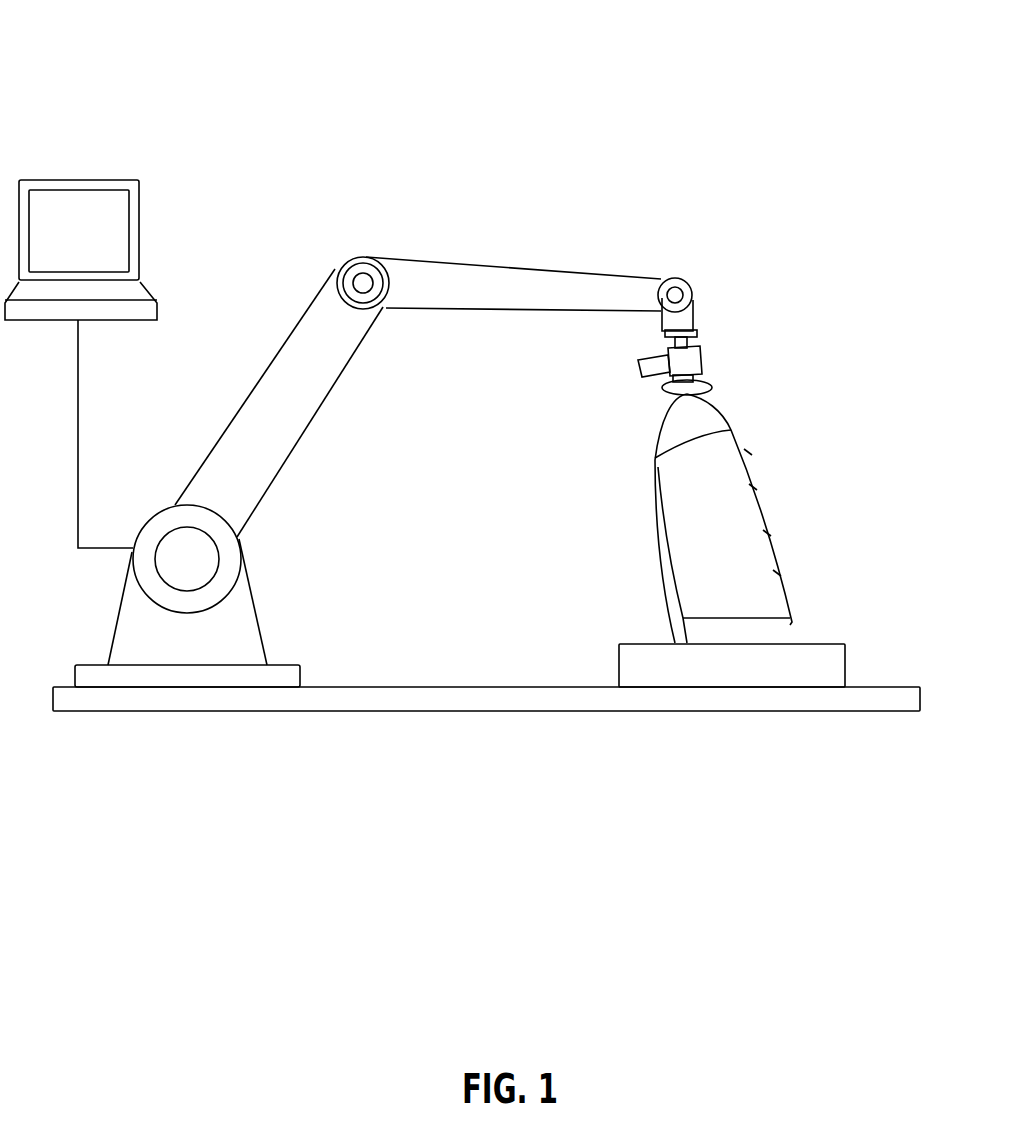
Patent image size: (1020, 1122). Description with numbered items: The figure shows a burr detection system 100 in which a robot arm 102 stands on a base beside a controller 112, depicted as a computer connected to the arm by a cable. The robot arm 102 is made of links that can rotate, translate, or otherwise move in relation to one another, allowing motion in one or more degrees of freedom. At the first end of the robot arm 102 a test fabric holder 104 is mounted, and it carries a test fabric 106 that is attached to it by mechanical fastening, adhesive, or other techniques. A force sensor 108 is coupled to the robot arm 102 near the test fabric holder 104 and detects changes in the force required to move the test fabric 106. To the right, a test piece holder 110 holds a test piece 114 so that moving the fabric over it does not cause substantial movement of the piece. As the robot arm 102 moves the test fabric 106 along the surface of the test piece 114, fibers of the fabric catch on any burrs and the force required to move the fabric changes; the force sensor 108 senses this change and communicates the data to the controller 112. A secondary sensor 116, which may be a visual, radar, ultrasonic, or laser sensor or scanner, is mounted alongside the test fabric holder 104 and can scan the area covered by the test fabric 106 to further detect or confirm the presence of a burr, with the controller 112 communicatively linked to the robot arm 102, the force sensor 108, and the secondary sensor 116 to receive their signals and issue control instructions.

The burr detection system 100 is at (150, 60).
The robot arm 102 is at (517, 264).
The test fabric holder 104 is at (706, 380).
The test fabric 106 is at (710, 389).
The force sensor 108 is at (703, 357).
The test piece holder 110 is at (805, 641).
The controller 112 is at (140, 228).
The test piece 114 is at (748, 451).
The secondary sensor 116 is at (638, 367).